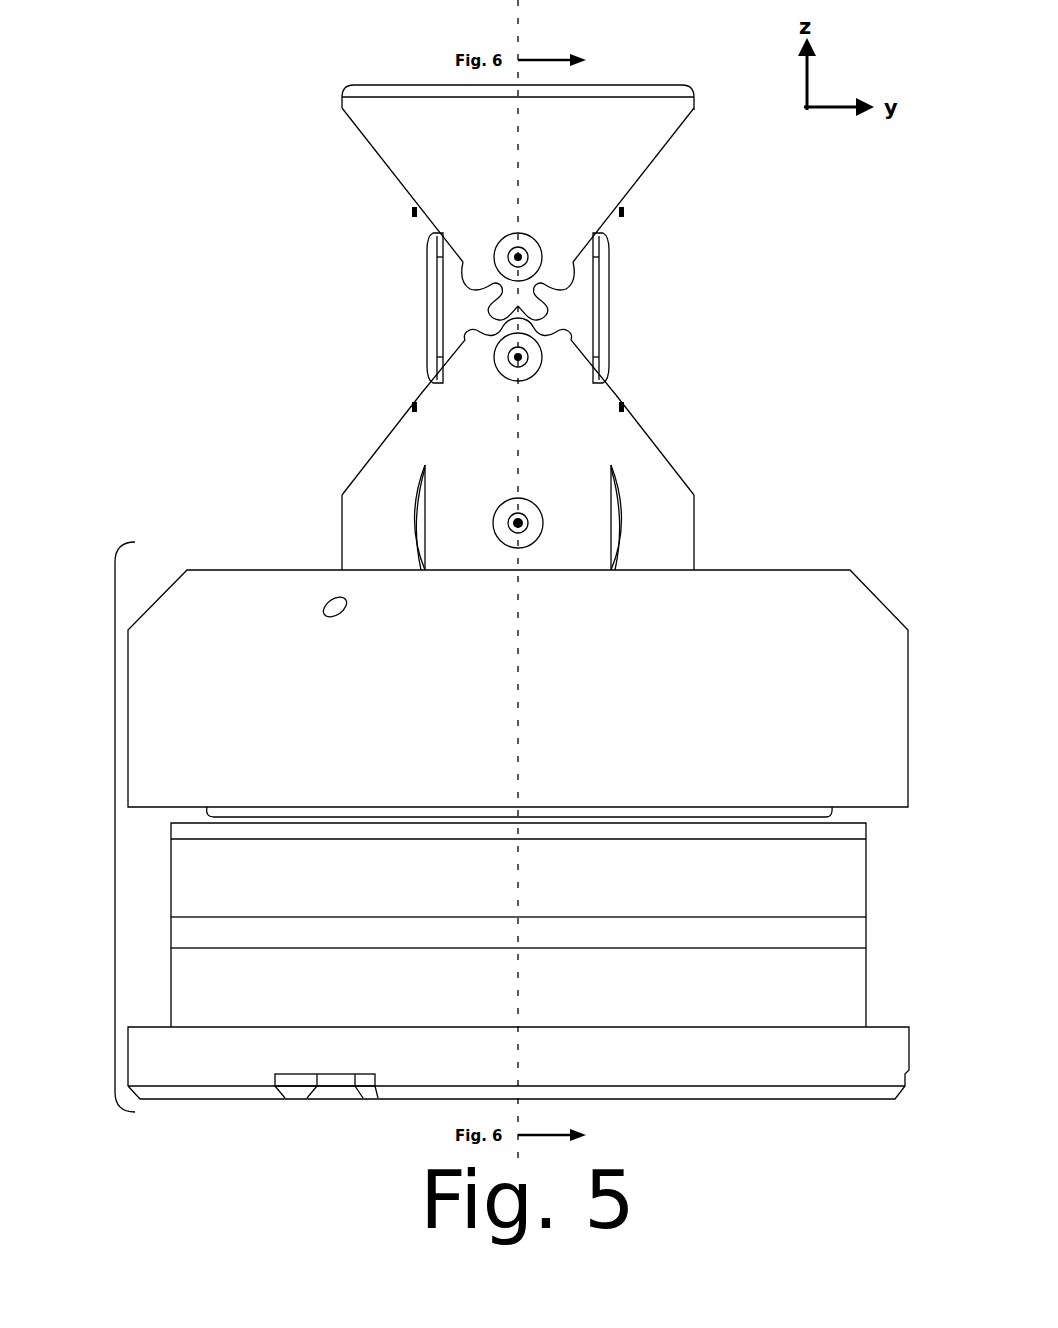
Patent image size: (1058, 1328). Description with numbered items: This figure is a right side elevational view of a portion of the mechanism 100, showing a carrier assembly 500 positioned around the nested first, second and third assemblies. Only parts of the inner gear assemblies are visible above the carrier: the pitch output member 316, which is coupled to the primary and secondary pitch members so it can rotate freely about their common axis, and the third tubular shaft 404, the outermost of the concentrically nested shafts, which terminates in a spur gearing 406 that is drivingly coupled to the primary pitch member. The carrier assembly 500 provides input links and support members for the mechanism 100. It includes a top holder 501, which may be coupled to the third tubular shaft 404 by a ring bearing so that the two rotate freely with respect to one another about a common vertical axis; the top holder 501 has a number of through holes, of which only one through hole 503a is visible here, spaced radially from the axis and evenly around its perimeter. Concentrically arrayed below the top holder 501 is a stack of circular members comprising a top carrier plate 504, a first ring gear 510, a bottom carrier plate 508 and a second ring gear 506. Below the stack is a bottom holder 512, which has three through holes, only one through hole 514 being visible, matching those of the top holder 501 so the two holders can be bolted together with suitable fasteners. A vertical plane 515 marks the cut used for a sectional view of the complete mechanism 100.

The mechanism 100 is at (208, 75).
The pitch output member 316 is at (387, 140).
The spur gearing 406 is at (448, 305).
The third tubular shaft 404 is at (402, 480).
The top holder 501 is at (718, 605).
The through hole 503a is at (328, 597).
The carrier assembly 500 is at (115, 827).
The top carrier plate 504 is at (838, 833).
The second ring gear 506 is at (838, 887).
The bottom carrier plate 508 is at (838, 940).
The first ring gear 510 is at (838, 993).
The bottom holder 512 is at (838, 1063).
The through hole 514 is at (327, 1095).
The plane 515 is at (518, 20).